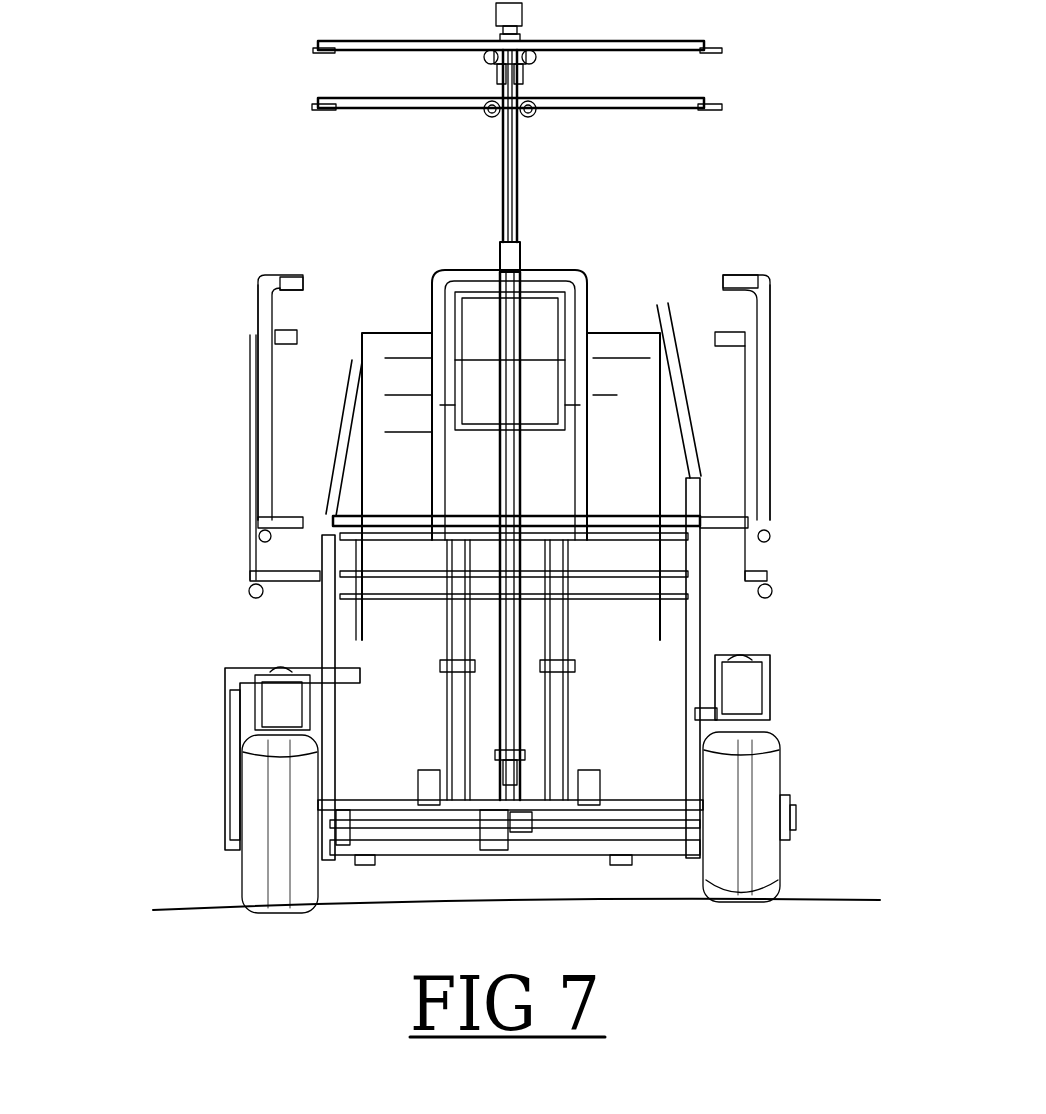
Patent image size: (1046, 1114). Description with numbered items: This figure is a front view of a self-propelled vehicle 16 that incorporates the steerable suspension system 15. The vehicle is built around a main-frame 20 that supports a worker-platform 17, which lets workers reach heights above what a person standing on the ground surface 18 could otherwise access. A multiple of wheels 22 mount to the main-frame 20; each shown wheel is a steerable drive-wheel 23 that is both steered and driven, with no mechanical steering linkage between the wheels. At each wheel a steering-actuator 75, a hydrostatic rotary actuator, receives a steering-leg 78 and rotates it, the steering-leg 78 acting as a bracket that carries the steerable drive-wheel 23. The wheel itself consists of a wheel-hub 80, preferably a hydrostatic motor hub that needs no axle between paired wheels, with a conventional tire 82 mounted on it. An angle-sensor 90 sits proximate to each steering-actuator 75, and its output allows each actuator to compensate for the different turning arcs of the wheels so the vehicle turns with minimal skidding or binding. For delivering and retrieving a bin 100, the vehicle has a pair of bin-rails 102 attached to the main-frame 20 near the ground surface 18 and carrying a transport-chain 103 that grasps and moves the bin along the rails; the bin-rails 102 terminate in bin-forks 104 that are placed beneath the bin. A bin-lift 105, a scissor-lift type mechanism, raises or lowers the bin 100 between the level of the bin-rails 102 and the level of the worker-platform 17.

The steerable suspension system 15 is at (868, 594).
The self-propelled vehicle 16 is at (128, 495).
The worker-platform 17 is at (300, 515).
The ground surface 18 is at (222, 905).
The main-frame 20 is at (425, 815).
The wheels 22 is at (262, 778).
The steerable drive-wheel 23 is at (832, 694).
The steering-actuator 75 is at (280, 700).
The steering-leg 78 is at (752, 752).
The wheel-hub 80 is at (790, 815).
The tire 82 is at (750, 880).
The angle-sensor 90 is at (283, 668).
The bin 100 is at (605, 355).
The bin-rails 102 is at (597, 815).
The transport-chain 103 is at (425, 775).
The bin-forks 104 is at (437, 835).
The bin-lift 105 is at (447, 665).